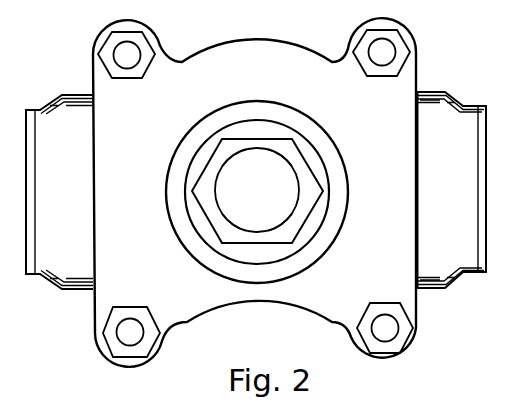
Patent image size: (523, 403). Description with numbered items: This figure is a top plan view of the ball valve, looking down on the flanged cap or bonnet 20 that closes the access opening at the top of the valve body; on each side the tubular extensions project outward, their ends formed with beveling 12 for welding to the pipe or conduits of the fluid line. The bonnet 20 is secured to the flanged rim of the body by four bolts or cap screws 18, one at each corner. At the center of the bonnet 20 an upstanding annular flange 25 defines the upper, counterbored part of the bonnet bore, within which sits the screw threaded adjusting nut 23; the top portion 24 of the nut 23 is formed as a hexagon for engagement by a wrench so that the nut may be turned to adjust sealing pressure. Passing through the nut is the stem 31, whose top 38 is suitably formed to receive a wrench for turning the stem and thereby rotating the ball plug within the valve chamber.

The beveling 12 is at (482, 272).
The bolts or cap screws 18 is at (110, 350).
The bonnet 20 is at (267, 318).
The adjusting nut 23 is at (256, 130).
The top portion of adjusting nut 24 is at (306, 158).
The upstanding annular flange 25 is at (298, 258).
The stem 31 is at (264, 201).
The top of the stem 38 is at (228, 213).